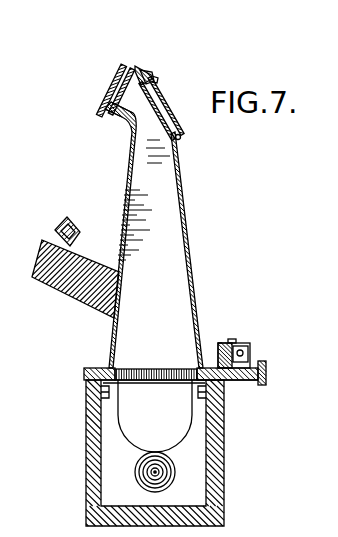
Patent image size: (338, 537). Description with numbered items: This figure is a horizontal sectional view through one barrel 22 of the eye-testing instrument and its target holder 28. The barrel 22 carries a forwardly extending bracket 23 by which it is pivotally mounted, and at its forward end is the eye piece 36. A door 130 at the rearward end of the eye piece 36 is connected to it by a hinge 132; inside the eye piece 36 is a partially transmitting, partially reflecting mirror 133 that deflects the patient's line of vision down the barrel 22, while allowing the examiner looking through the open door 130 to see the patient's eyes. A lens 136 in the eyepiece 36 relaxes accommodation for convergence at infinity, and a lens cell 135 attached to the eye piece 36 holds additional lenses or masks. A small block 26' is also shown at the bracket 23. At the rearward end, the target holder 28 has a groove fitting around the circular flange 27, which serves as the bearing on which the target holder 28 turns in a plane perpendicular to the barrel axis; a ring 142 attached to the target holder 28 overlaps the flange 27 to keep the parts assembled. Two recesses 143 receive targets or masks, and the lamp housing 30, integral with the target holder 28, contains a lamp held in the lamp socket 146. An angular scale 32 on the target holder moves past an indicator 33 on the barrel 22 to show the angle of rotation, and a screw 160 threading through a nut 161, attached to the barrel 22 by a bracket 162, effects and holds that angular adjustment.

The barrel 22 is at (188, 224).
The bracket 23 is at (62, 293).
The bracket 26' is at (43, 226).
The frame 27 is at (86, 379).
The target holder 28 is at (223, 402).
The lamp housing 30 is at (226, 493).
The angular scale 32 is at (264, 381).
The indicator 33 is at (266, 370).
The eye piece 36 is at (112, 124).
The door 130 is at (160, 96).
The hinge 132 is at (183, 135).
The mirror 133 is at (158, 145).
The lens cell 135 is at (118, 80).
The lens 136 is at (116, 94).
The ring 142 is at (87, 369).
The recesses 143 is at (118, 380).
The lamp socket 146 is at (151, 474).
The screw 160 is at (250, 349).
The nut 161 is at (267, 353).
The bracket 162 is at (222, 343).